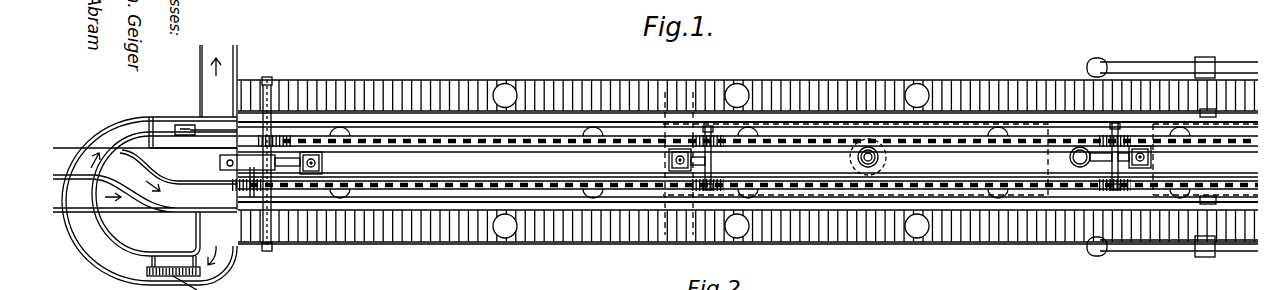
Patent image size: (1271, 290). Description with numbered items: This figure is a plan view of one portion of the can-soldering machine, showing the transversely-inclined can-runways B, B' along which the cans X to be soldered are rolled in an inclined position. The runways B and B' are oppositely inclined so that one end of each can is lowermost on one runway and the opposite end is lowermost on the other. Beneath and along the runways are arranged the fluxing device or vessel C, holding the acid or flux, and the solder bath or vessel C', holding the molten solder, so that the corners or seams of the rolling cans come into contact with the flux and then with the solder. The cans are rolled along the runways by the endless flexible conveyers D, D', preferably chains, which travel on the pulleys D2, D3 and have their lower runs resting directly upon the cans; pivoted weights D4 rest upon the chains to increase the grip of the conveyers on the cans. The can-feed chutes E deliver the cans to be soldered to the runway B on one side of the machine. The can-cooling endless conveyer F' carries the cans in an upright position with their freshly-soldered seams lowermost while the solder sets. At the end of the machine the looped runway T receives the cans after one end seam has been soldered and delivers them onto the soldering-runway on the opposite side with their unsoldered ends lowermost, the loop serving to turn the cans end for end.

The looped runway T is at (149, 203).
The can-feed chute E is at (146, 196).
The can-cooling endless conveyer F' is at (748, 159).
The endless flexible conveyer D is at (748, 169).
The endless flexible conveyer D' is at (748, 162).
The can-runway B' is at (770, 134).
The can-runway B is at (754, 194).
The can X is at (592, 191).
The pulley D3 is at (1138, 138).
The pulley D2 is at (1097, 182).
The pivoted weight D4 is at (235, 184).
The fluxing device or vessel C is at (848, 157).
The solder bath or vessel C' is at (1164, 157).